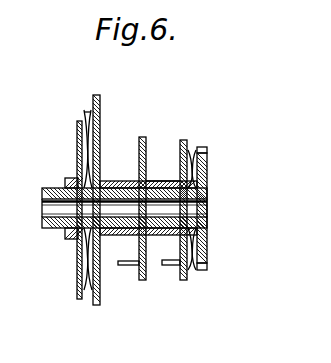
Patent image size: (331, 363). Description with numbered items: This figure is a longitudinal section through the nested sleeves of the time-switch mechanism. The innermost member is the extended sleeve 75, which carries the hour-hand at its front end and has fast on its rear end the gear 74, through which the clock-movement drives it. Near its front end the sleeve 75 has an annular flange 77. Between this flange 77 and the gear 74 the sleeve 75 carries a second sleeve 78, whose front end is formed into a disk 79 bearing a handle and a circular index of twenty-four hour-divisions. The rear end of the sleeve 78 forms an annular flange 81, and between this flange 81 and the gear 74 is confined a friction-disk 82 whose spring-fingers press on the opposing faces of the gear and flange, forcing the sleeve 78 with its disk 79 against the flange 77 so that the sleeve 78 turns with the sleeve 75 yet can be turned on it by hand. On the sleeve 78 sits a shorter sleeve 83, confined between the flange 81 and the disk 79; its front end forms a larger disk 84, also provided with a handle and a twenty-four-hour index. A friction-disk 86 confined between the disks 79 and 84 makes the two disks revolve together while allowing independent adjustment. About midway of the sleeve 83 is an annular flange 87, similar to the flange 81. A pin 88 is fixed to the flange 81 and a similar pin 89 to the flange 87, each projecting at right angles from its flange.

The gear 74 is at (207, 168).
The sleeve 75 is at (42, 205).
The annular flange 77 is at (68, 178).
The sleeve 78 is at (120, 181).
The disk 79 is at (77, 131).
The annular flange 81 is at (183, 140).
The friction-disk 82 is at (192, 270).
The sleeve 83 is at (162, 181).
The disk 84 is at (103, 103).
The friction-disk 86 is at (86, 100).
The annular flange 87 is at (142, 137).
The pin 88 is at (170, 265).
The pin 89 is at (126, 265).